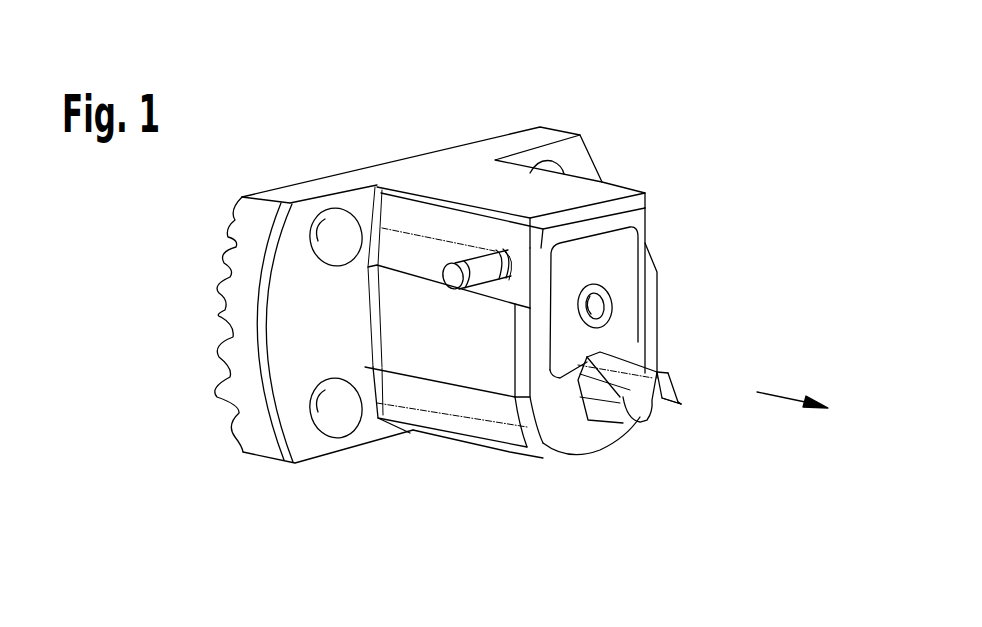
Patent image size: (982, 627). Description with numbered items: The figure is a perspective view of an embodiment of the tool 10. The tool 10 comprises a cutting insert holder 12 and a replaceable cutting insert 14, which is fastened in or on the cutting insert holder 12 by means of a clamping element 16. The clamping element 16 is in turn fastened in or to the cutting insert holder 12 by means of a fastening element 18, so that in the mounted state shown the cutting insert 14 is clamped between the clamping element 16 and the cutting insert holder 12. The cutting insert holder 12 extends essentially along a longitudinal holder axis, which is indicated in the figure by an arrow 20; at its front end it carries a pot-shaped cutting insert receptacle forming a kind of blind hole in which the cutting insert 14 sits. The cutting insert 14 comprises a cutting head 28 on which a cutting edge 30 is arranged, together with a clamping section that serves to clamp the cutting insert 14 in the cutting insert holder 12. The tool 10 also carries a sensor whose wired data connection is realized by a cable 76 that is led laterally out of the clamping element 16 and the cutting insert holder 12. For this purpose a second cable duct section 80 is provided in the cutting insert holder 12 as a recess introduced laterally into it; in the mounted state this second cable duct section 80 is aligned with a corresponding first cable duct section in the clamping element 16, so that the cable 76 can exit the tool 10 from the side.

The tool 10 is at (725, 110).
The cutting insert holder 12 is at (442, 407).
The cutting insert 14 is at (648, 357).
The clamping element 16 is at (627, 245).
The fastening element 18 is at (603, 303).
The arrow 20 is at (778, 400).
The cutting head 28 is at (668, 380).
The cutting edge 30 is at (676, 405).
The cable 76 is at (483, 268).
The second cable duct section 80 is at (510, 290).